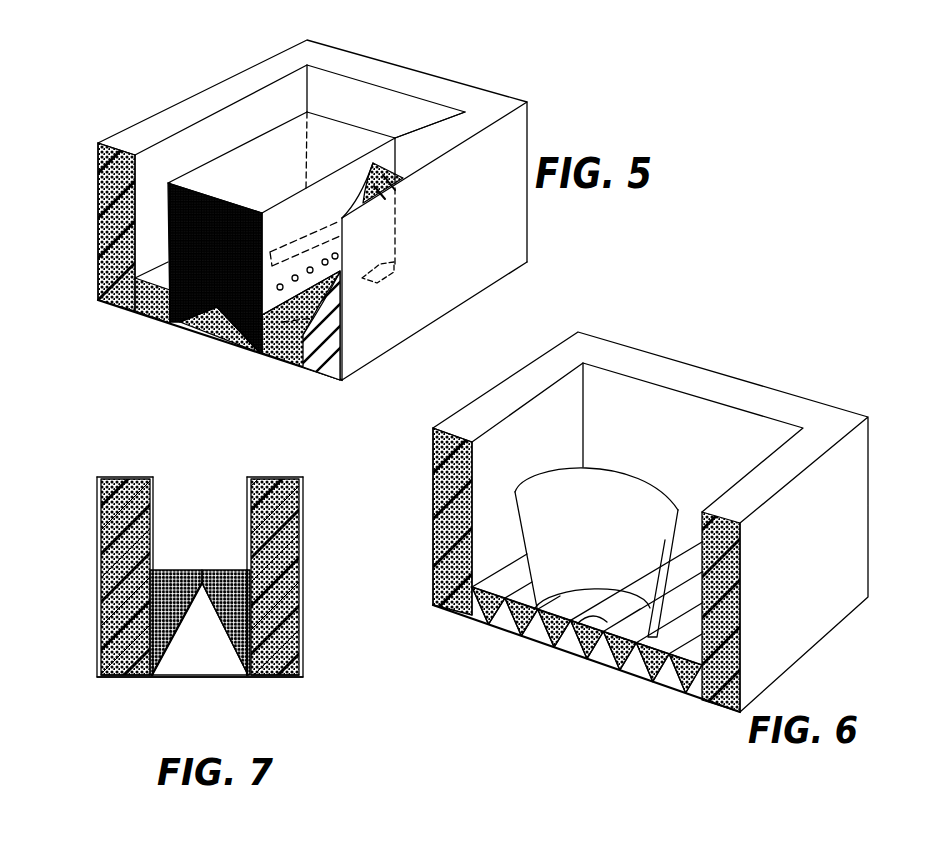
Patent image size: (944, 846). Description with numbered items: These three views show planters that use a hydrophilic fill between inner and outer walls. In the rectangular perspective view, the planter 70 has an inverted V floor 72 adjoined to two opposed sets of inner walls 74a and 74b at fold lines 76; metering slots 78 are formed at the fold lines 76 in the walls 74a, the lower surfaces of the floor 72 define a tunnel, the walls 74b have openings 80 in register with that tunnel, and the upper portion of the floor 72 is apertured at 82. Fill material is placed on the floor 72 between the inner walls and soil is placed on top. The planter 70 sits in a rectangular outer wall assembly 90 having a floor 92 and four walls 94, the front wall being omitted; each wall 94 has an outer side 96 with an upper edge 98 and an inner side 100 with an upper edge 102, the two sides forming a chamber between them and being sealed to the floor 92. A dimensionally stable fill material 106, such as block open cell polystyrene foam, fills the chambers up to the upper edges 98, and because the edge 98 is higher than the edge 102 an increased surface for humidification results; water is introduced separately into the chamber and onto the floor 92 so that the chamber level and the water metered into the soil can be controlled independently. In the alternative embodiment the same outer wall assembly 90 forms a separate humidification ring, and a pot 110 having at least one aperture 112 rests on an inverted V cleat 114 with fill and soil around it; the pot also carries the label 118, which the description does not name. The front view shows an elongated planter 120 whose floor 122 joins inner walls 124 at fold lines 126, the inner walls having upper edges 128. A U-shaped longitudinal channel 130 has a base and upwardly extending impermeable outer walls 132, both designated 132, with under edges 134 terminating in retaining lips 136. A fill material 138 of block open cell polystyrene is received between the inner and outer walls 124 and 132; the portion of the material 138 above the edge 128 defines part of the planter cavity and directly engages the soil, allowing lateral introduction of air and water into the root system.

In FIG. 5, the planter 70 is at (141, 369).
In FIG. 5, the inverted V floor 72 is at (247, 343).
In FIG. 5, the inner walls 74a is at (267, 180).
In FIG. 5, the inner walls 74b is at (168, 185).
In FIG. 5, the fold lines 76 is at (198, 315).
In FIG. 5, the metering slots 78 is at (377, 280).
In FIG. 5, the openings 80 is at (222, 332).
In FIG. 5, the apertures 82 is at (342, 243).
In FIG. 5, the outer wall assembly 90 is at (157, 106).
In FIG. 6, the outer wall assembly 90 is at (767, 378).
In FIG. 5, the floor 92 is at (293, 367).
In FIG. 5, the walls 94 is at (265, 58).
In FIG. 5, the outer side 96 is at (98, 222).
In FIG. 5, the upper edge 98 is at (197, 92).
In FIG. 5, the inner side 100 is at (110, 305).
In FIG. 5, the upper edge 102 is at (153, 263).
In FIG. 5, the dimensionally stable fill material 106 is at (98, 257).
In FIG. 6, the pot 110 is at (627, 469).
In FIG. 6, the aperture 112 is at (587, 623).
In FIG. 6, the inverted V cleat 114 is at (632, 660).
In FIG. 6, the pattern body 118 is at (620, 541).
In FIG. 7, the elongated planter 120 is at (147, 710).
In FIG. 7, the floor 122 is at (227, 643).
In FIG. 7, the inner walls 124 is at (273, 652).
In FIG. 7, the fold lines 126 is at (248, 678).
In FIG. 7, the upper edges 128 is at (255, 575).
In FIG. 7, the U-shaped longitudinal channel 130 is at (88, 662).
In FIG. 7, the outer walls 132 is at (97, 583).
In FIG. 7, the under edges 134 is at (97, 477).
In FIG. 7, the retaining lips 136 is at (152, 478).
In FIG. 7, the fill material 138 is at (113, 542).